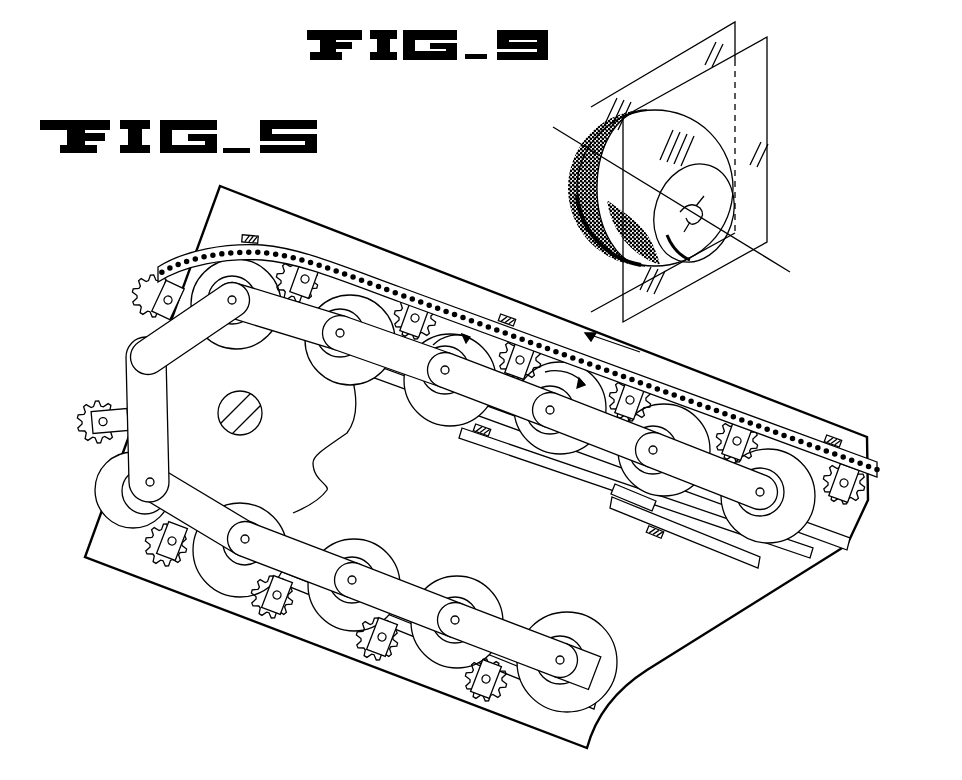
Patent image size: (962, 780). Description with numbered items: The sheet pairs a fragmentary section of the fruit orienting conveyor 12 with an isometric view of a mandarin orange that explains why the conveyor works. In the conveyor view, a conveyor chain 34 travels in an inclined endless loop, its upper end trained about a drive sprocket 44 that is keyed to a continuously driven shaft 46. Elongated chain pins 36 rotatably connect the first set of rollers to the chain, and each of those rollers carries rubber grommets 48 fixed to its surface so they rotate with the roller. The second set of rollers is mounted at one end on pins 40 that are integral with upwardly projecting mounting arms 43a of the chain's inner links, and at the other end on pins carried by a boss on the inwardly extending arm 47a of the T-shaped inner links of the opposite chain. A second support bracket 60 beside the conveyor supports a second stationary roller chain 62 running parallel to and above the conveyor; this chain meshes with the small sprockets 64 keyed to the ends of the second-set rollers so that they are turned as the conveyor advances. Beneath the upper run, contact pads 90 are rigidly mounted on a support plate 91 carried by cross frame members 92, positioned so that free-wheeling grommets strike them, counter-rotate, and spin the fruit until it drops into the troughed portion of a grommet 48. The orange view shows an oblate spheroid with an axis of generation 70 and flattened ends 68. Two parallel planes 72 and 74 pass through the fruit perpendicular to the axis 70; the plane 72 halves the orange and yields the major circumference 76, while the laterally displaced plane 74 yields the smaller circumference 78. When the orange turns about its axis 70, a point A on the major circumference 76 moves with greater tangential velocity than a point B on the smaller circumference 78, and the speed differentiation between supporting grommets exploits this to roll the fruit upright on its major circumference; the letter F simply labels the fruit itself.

In FIG. 5, the conveyor 12 is at (694, 380).
In FIG. 5, the conveyor chain 34 is at (527, 412).
In FIG. 5, the chain pins 36 is at (455, 493).
In FIG. 5, the pins 40 is at (158, 299).
In FIG. 5, the mounting arms 43a is at (348, 268).
In FIG. 5, the drive sprocket 44 is at (316, 463).
In FIG. 5, the shaft 46 is at (231, 434).
In FIG. 5, the inwardly extending arm 47a is at (186, 311).
In FIG. 5, the grommets 48 is at (420, 386).
In FIG. 5, the second support bracket 60 is at (533, 336).
In FIG. 5, the second stationary roller chain 62 is at (660, 384).
In FIG. 5, the sprockets 64 is at (150, 290).
In FIG. 5, the contact pads 90 is at (630, 508).
In FIG. 5, the support plate 91 is at (738, 558).
In FIG. 5, the cross frame members 92 is at (652, 533).
In FIG. 9, the flattened ends 68 is at (578, 178).
In FIG. 9, the axis of generation 70 is at (564, 136).
In FIG. 9, the plane 72 is at (603, 101).
In FIG. 9, the plane 74 is at (762, 98).
In FIG. 9, the major circumference 76 is at (670, 121).
In FIG. 9, the circumference 78 is at (690, 166).
In FIG. 9, the point on the major circumference A is at (648, 127).
In FIG. 9, the point on the smaller circumference B is at (693, 160).
In FIG. 9, the fruit F is at (578, 199).